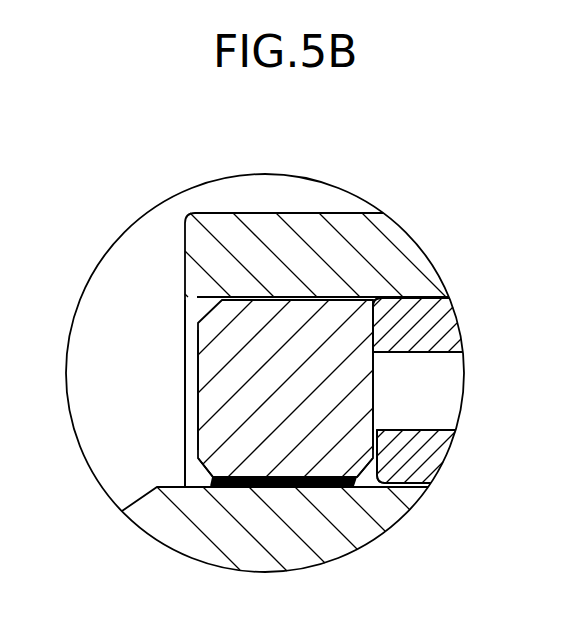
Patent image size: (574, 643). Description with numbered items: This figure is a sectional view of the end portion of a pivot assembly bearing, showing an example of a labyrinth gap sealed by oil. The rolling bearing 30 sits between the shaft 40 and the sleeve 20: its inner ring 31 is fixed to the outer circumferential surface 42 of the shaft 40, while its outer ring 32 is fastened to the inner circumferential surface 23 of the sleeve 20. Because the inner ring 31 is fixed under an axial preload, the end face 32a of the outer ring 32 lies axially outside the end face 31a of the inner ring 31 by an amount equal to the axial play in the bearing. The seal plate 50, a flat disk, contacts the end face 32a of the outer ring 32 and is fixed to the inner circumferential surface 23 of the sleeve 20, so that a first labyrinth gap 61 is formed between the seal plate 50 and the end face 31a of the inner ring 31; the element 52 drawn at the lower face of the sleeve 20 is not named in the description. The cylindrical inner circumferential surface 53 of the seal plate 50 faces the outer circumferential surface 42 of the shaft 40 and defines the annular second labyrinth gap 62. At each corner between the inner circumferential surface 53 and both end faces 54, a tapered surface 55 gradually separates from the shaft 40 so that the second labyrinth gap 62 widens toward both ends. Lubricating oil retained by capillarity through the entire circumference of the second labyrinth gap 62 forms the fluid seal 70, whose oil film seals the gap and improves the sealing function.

The sleeve 20 is at (336, 206).
The lower surface of first member 52 is at (285, 297).
The inner circumferential surface 23 is at (202, 313).
The seal plate 50 is at (197, 375).
The end faces 54 is at (197, 412).
The tapered surface 55 is at (198, 463).
The inner circumferential surface 53 is at (318, 484).
The second labyrinth gap 62 is at (204, 478).
The shaft 40 is at (135, 496).
The fluid seal 70 is at (273, 487).
The rolling bearing 30 is at (418, 290).
The outer ring 32 is at (422, 328).
The end face 32a is at (373, 335).
The inner ring 31 is at (423, 455).
The end face 31a is at (375, 448).
The first labyrinth gap 61 is at (386, 425).
The outer circumferential surface 42 is at (400, 480).